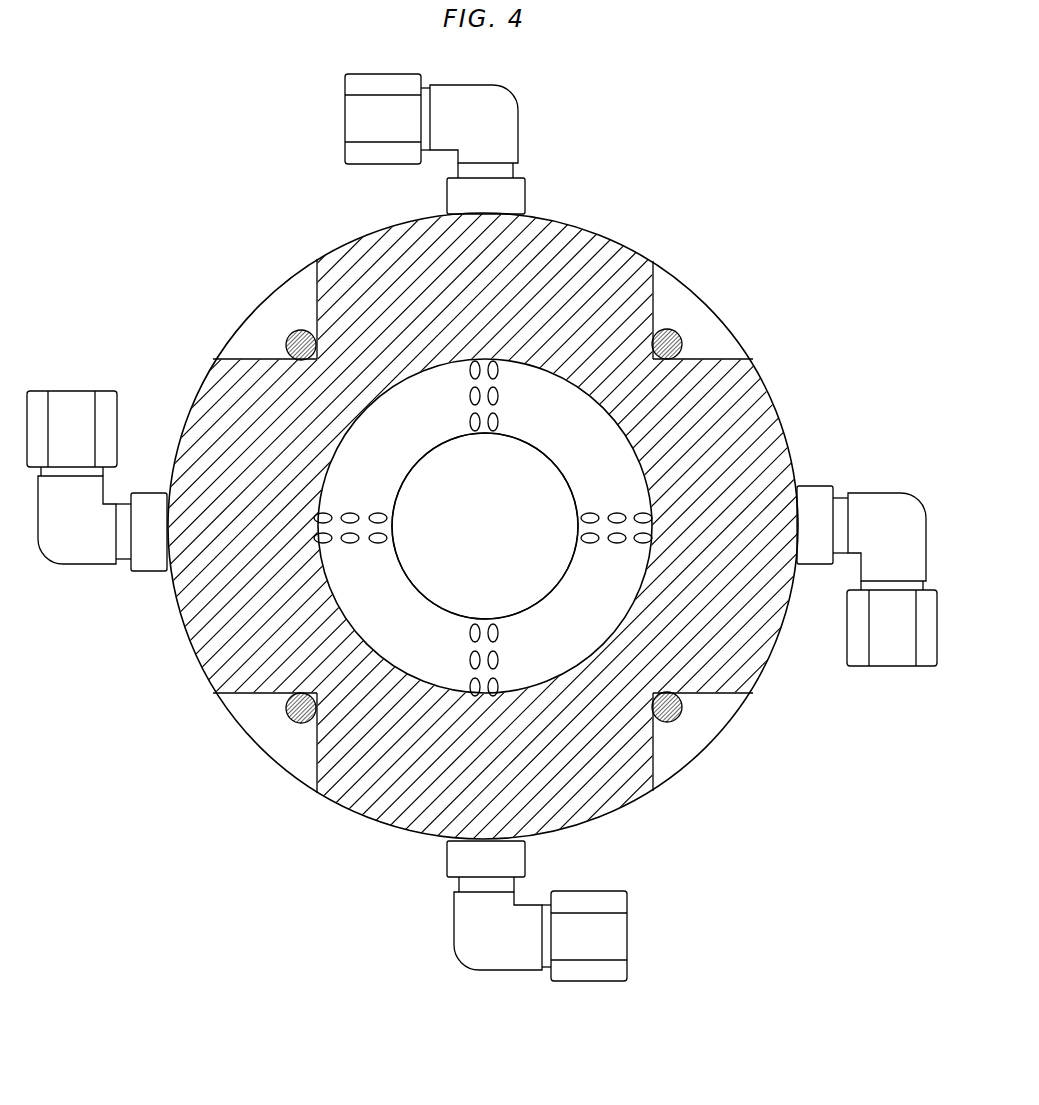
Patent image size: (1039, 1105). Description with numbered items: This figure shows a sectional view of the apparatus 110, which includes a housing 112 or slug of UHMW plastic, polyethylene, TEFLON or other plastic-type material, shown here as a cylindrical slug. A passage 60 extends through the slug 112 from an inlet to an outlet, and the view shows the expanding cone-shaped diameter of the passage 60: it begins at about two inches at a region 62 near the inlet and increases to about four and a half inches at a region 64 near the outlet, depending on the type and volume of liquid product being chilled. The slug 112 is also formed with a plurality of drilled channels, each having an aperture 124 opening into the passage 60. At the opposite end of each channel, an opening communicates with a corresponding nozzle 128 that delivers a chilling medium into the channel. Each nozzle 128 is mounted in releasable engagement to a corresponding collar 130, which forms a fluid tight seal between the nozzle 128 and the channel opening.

The passage 60 is at (474, 537).
The region near the inlet 62 is at (553, 458).
The region near the outlet 64 is at (372, 411).
The apparatus 110 is at (760, 238).
The housing 112 is at (620, 240).
The aperture 124 is at (503, 423).
The nozzle 128 is at (520, 113).
The collar 130 is at (525, 202).